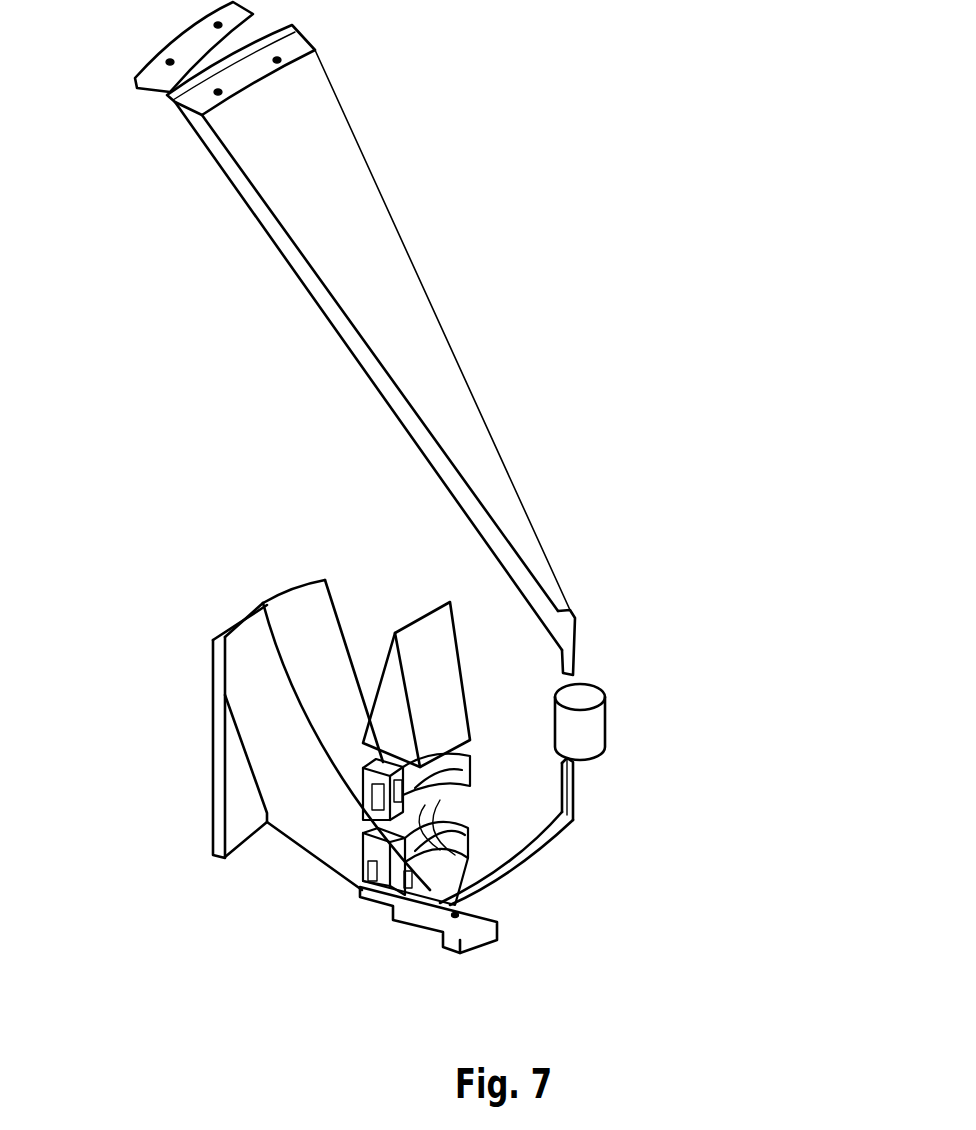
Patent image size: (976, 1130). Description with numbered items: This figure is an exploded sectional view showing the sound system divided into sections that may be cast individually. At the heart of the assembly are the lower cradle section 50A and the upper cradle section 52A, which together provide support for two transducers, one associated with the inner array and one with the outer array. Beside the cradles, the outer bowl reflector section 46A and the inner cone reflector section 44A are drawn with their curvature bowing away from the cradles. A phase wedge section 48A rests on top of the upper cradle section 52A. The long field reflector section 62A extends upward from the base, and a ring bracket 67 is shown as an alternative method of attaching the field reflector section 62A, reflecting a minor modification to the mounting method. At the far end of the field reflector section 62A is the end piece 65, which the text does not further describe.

The end bracket 65 is at (172, 40).
The field reflector section 62A is at (399, 305).
The phase wedge section 48A is at (443, 687).
The ring bracket 67 is at (598, 722).
The inner cone reflector section 44A is at (582, 820).
The outer bowl reflector section 46A is at (263, 603).
The upper cradle section 52A is at (395, 790).
The lower cradle section 50A is at (375, 858).